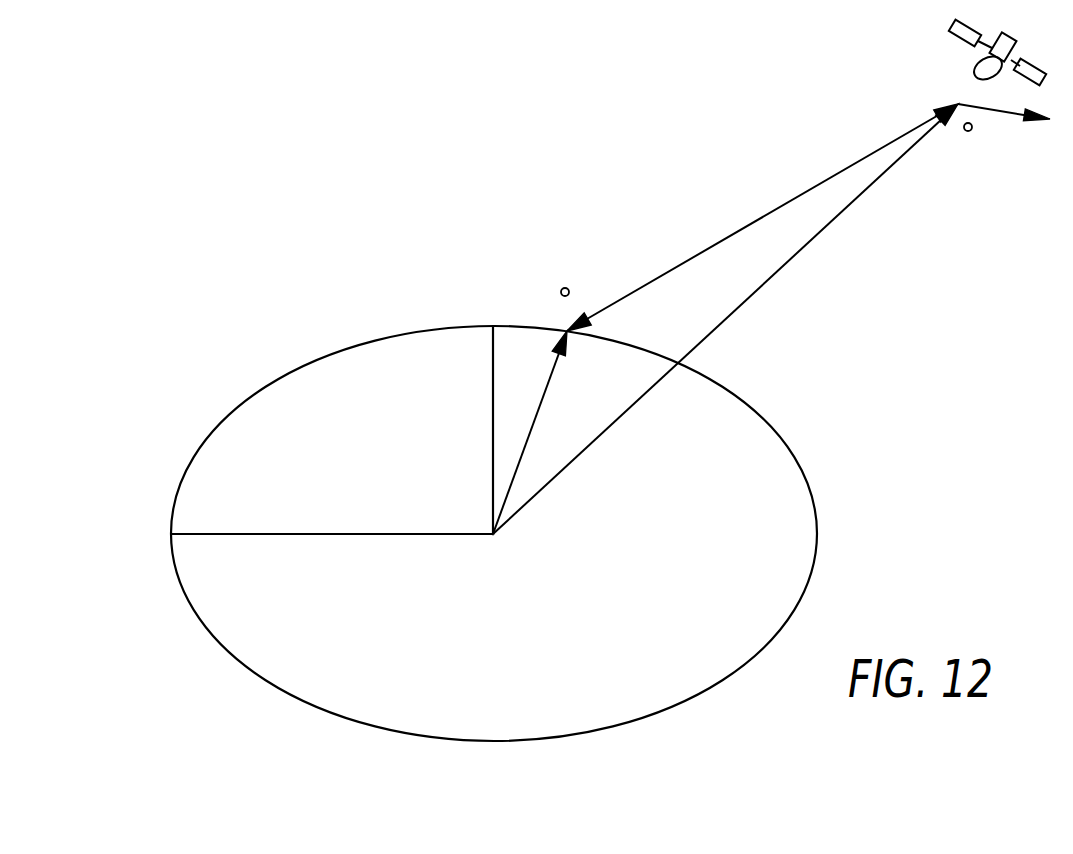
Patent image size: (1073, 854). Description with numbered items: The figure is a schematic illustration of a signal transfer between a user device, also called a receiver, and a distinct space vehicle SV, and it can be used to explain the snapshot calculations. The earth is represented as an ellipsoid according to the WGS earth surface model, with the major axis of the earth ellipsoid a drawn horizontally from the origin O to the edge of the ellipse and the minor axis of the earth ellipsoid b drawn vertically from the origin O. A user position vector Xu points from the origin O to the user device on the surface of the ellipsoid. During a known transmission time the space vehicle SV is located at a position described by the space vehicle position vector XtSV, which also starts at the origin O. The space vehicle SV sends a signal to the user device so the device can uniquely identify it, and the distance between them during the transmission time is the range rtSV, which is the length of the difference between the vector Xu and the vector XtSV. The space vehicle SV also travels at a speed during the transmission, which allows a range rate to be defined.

The major axis of the earth ellipsoid a is at (332, 556).
The minor axis of the earth ellipsoid b is at (476, 430).
The origin O is at (492, 558).
The user position vector Xu is at (542, 411).
The space vehicle position vector XtSV is at (725, 319).
The range rtSV is at (762, 217).
The space vehicle SV is at (999, 94).